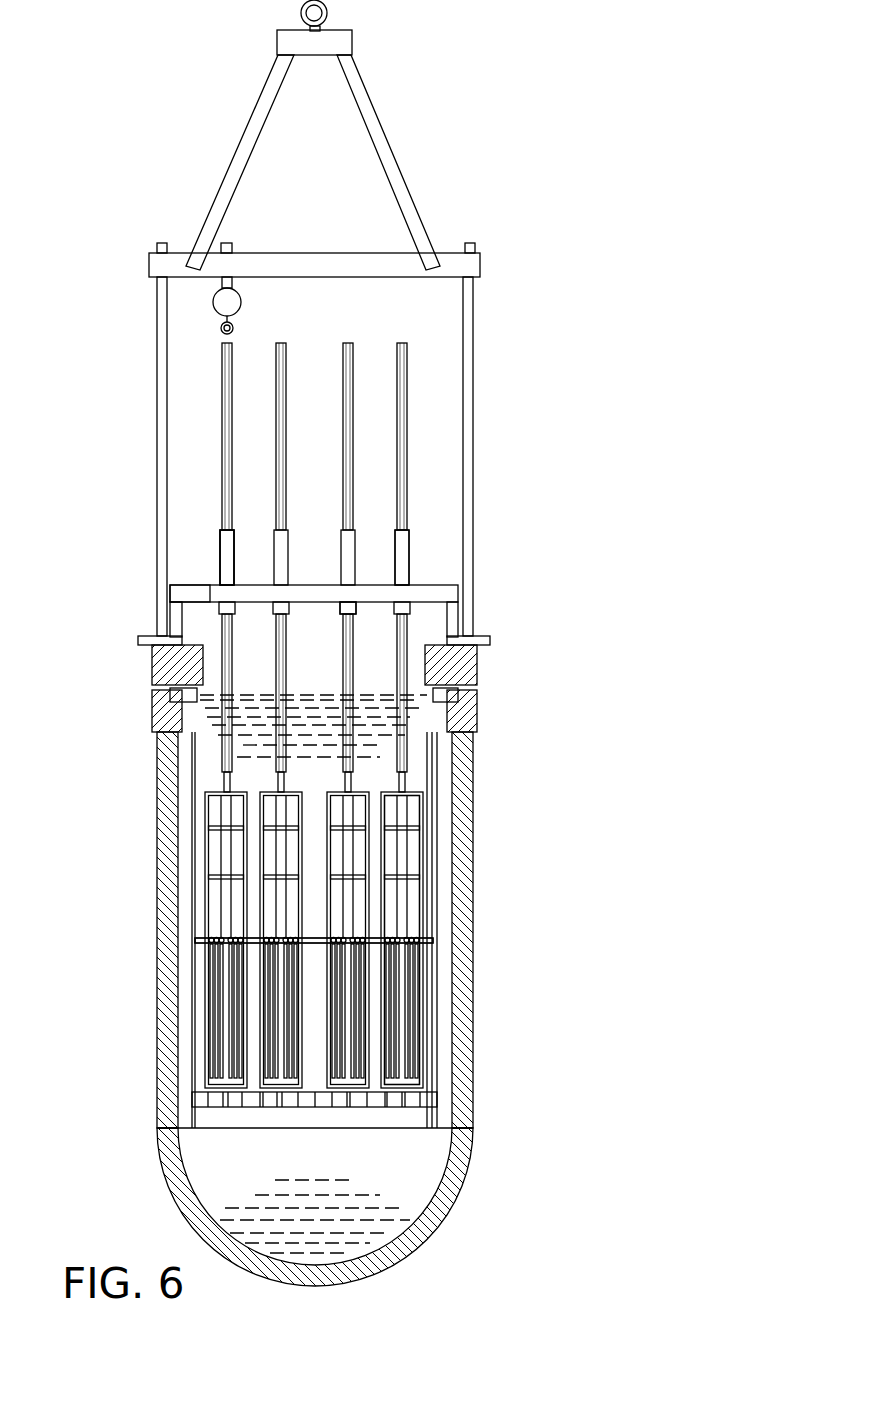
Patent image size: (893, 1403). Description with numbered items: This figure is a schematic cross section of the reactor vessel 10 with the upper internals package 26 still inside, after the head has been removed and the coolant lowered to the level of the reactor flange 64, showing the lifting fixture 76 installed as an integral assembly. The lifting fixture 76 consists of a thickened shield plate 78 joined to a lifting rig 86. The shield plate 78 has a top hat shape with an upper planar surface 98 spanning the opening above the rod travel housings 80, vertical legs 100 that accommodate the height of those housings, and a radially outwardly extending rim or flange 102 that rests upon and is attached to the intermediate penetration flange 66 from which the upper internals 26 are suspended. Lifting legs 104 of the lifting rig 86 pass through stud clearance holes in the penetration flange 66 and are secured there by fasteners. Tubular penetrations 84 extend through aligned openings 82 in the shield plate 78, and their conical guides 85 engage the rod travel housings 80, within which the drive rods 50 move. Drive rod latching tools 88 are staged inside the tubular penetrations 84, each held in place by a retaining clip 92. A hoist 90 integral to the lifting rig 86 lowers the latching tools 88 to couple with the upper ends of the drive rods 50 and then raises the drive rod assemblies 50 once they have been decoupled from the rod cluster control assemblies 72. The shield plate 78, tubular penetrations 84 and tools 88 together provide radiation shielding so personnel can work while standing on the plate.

The reactor vessel 10 is at (472, 1023).
The upper internals package 26 is at (413, 815).
The drive rod 50 is at (405, 860).
The reactor flange 64 is at (477, 708).
The intermediate penetration flange 66 is at (477, 667).
The rod cluster control assemblies 72 is at (413, 930).
The lifting fixture 76 is at (500, 322).
The shield plate 78 is at (440, 585).
The rod travel housings 80 is at (222, 757).
The openings 82 is at (408, 595).
The tubular penetrations 84 is at (220, 547).
The conical guides 85 is at (355, 607).
The lifting rig 86 is at (386, 124).
The drive rod latching tools 88 is at (343, 365).
The hoist 90 is at (250, 300).
The retaining clip 92 is at (235, 530).
The upper planar surface 98 is at (203, 585).
The vertical legs 100 is at (173, 620).
The radially outwardly extending rim or flange 102 is at (140, 638).
The lifting legs 104 is at (473, 588).